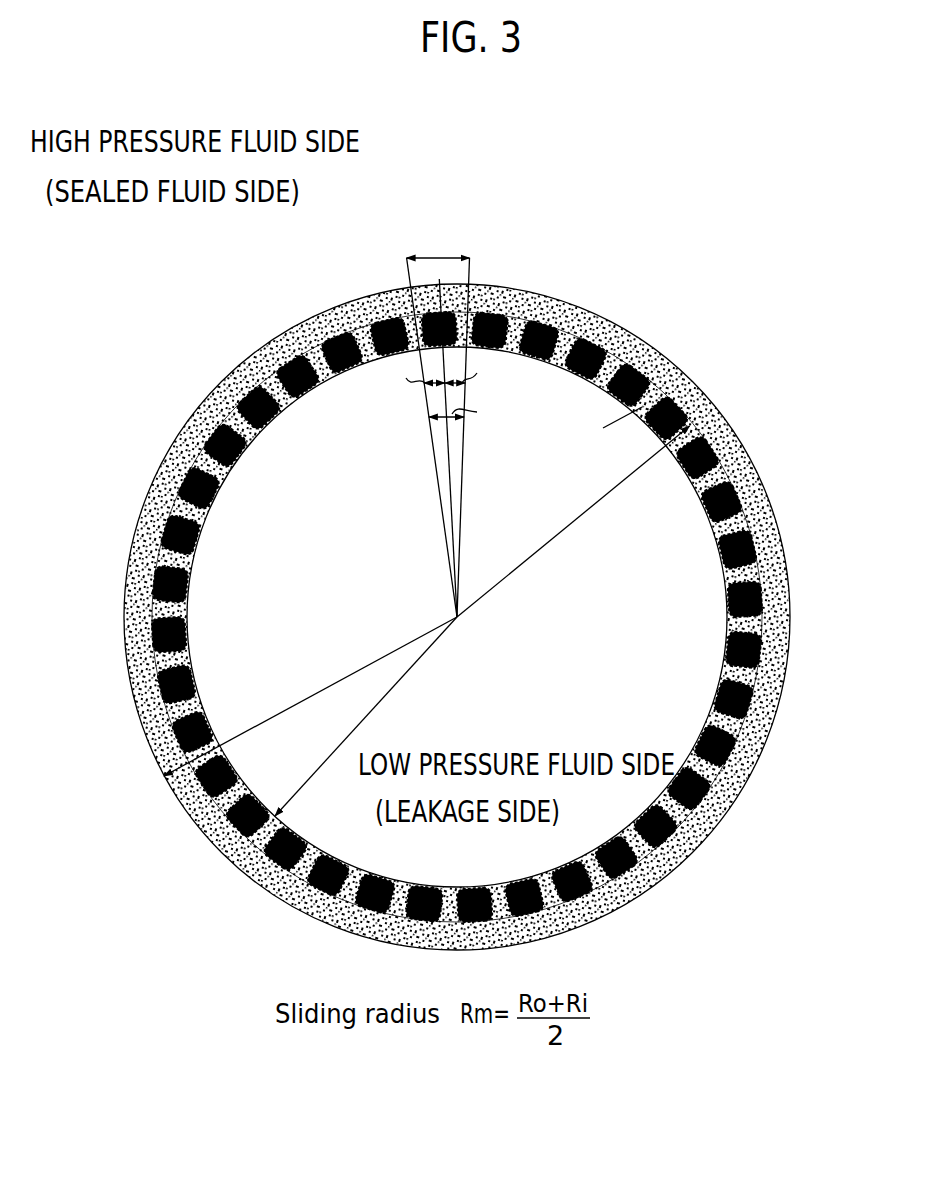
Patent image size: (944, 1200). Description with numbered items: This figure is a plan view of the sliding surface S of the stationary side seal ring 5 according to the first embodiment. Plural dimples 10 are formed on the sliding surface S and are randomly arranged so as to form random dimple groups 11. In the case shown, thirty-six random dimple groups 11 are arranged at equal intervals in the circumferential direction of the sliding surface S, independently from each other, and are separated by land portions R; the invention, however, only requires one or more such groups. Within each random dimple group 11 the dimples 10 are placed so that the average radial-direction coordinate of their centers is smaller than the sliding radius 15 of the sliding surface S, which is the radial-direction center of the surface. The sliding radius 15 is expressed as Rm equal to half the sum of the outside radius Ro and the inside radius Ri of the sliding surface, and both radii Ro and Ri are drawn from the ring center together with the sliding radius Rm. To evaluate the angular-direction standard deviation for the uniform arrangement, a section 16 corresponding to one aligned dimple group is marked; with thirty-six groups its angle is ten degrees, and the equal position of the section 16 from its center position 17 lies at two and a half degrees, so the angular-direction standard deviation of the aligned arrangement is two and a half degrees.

The stationary side seal ring 5 is at (347, 299).
The dimple 10 is at (348, 424).
The random dimple group 11 is at (352, 352).
The sliding radius 15 is at (713, 412).
The section 16 is at (434, 257).
The center position 17 is at (448, 470).
The sliding surface S is at (596, 314).
The land portion R is at (600, 383).
The sliding radius Rm is at (603, 497).
The outside radius Ro is at (318, 691).
The inside radius Ri is at (370, 715).